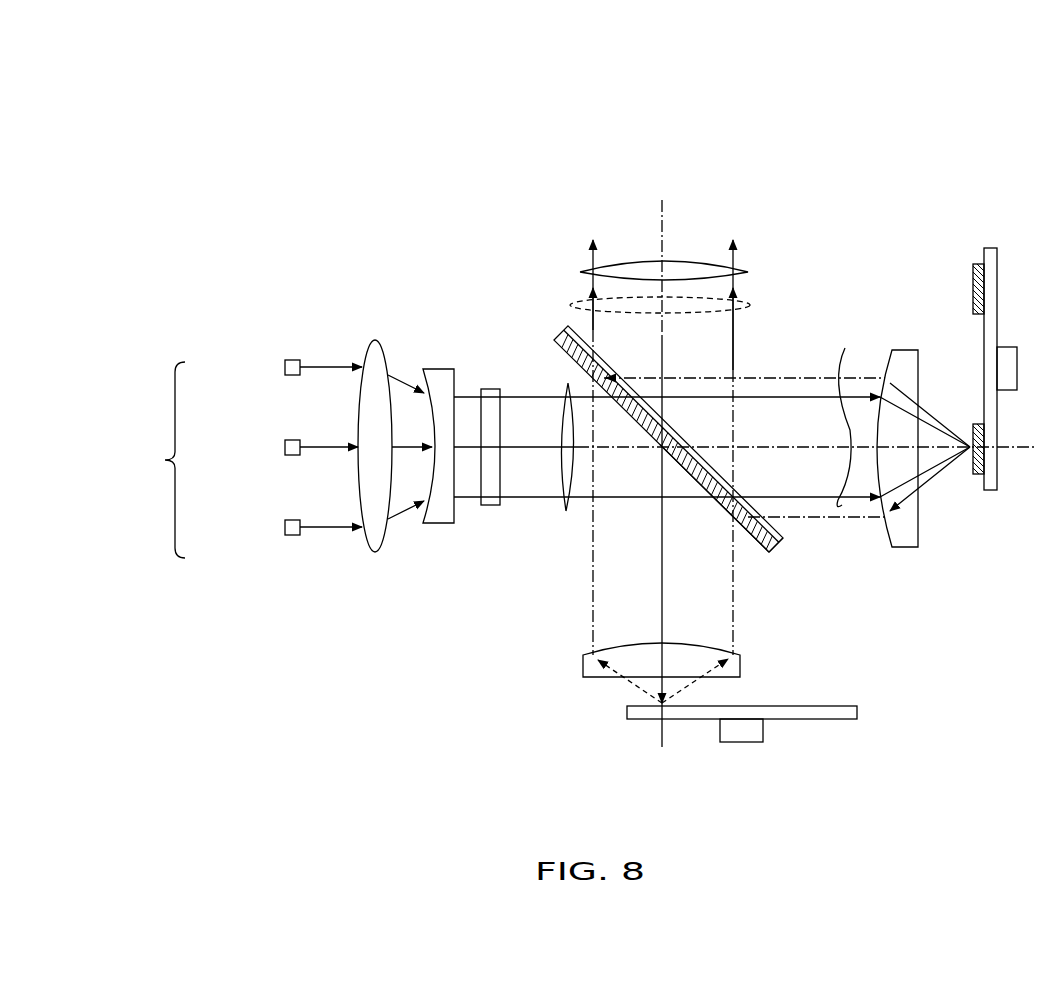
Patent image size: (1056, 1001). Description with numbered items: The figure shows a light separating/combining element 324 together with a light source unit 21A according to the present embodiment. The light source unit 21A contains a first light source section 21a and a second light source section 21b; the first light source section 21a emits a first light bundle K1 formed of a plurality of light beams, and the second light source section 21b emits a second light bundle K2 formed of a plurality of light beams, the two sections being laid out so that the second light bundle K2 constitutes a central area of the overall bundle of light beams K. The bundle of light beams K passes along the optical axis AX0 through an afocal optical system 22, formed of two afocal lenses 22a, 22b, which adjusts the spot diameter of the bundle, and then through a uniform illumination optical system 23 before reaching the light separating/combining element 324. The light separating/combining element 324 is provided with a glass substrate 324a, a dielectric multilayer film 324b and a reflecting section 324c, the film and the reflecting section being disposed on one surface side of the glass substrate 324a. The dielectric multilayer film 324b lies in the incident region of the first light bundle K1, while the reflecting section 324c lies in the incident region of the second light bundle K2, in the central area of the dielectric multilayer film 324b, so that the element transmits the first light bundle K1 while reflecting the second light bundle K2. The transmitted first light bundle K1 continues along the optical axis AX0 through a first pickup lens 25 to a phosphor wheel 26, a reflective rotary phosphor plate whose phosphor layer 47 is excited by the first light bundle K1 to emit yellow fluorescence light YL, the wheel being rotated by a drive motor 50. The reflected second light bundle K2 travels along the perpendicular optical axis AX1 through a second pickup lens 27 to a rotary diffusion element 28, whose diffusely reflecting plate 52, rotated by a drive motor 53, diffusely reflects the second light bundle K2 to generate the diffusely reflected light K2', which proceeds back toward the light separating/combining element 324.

The light source unit 21A is at (151, 460).
The first light source section 21a is at (282, 368).
The second light source section 21b is at (282, 448).
The afocal optical system 22 is at (402, 515).
The afocal lens 22a is at (378, 553).
The afocal lens 22b is at (440, 524).
The uniform illumination optical system 23 is at (492, 507).
The light separating/combining element 324 is at (714, 477).
The glass substrate 324a is at (746, 518).
The dielectric multilayer film 324b is at (765, 550).
The reflecting section 324c is at (673, 430).
The first pickup lens 25 is at (908, 352).
The phosphor wheel 26 is at (1001, 244).
The phosphor layer 47 is at (973, 283).
The drive motor 50 is at (1012, 360).
The second pickup lens 27 is at (598, 675).
The rotary diffusion element 28 is at (784, 727).
The diffusely reflecting plate 52 is at (832, 714).
The drive motor 53 is at (740, 742).
The optical axis AX0 is at (1013, 448).
The optical axis AX1 is at (664, 212).
The first light bundle K1 is at (508, 389).
The second light bundle K2 is at (583, 519).
The diffusely reflected light K2' is at (770, 447).
The bundle of light beams K is at (565, 512).
The yellow fluorescence light YL is at (746, 272).